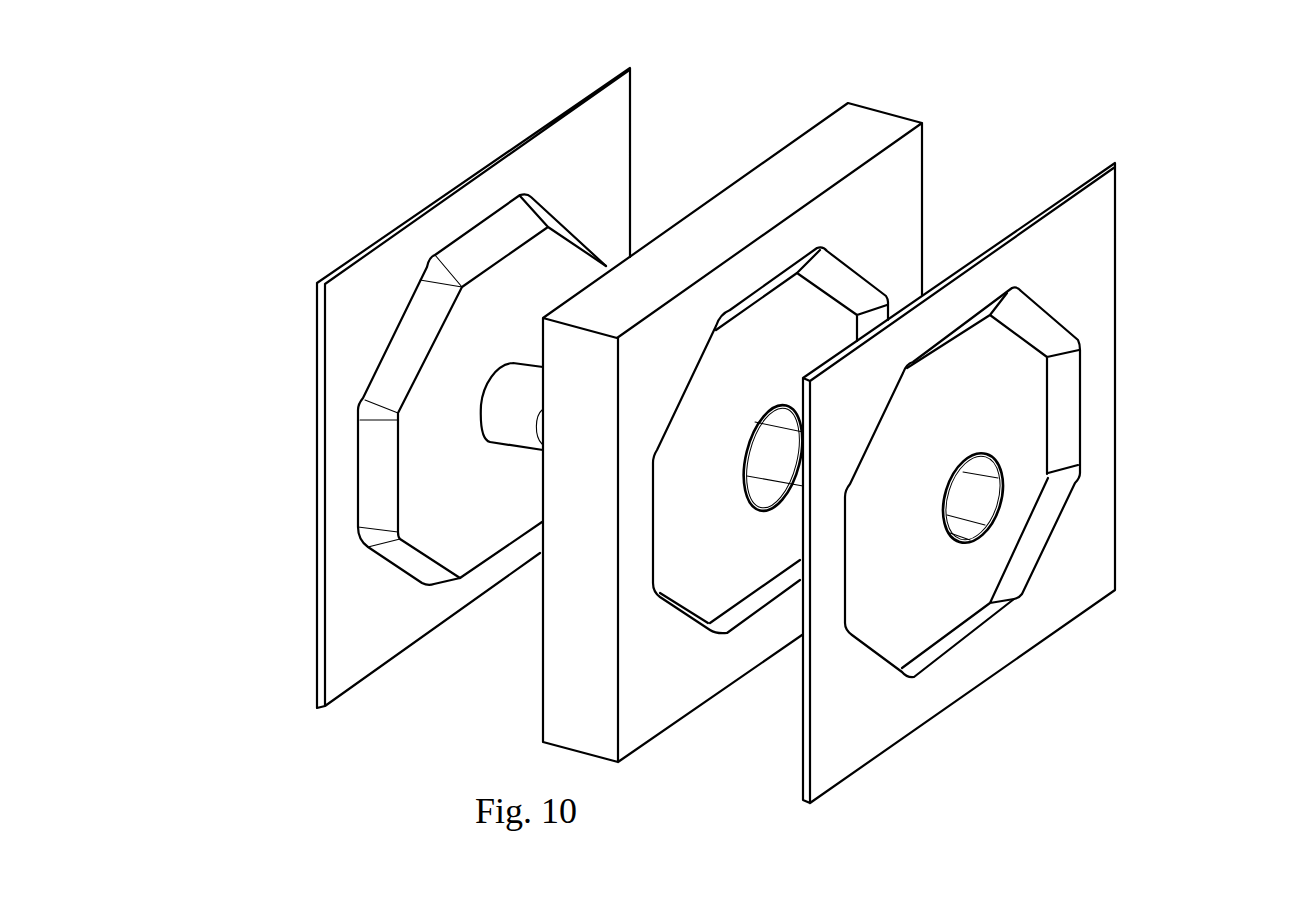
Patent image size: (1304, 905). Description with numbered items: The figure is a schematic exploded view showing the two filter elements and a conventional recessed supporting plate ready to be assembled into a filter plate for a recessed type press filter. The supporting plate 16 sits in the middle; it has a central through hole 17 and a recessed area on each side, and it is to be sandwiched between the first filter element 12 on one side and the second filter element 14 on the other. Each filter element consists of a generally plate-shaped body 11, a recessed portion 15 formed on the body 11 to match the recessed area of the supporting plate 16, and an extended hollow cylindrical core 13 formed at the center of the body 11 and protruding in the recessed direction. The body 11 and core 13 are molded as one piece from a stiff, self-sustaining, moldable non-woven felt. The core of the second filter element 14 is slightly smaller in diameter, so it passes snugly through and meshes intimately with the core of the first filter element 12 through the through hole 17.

The plate-shaped body 11 is at (746, 411).
The first filter element 12 is at (1137, 277).
The extended hollow cylindrical core 13 is at (518, 398).
The second filter element 14 is at (642, 115).
The recessed portion 15 is at (440, 483).
The supporting plate 16 is at (945, 143).
The central through hole 17 is at (777, 458).